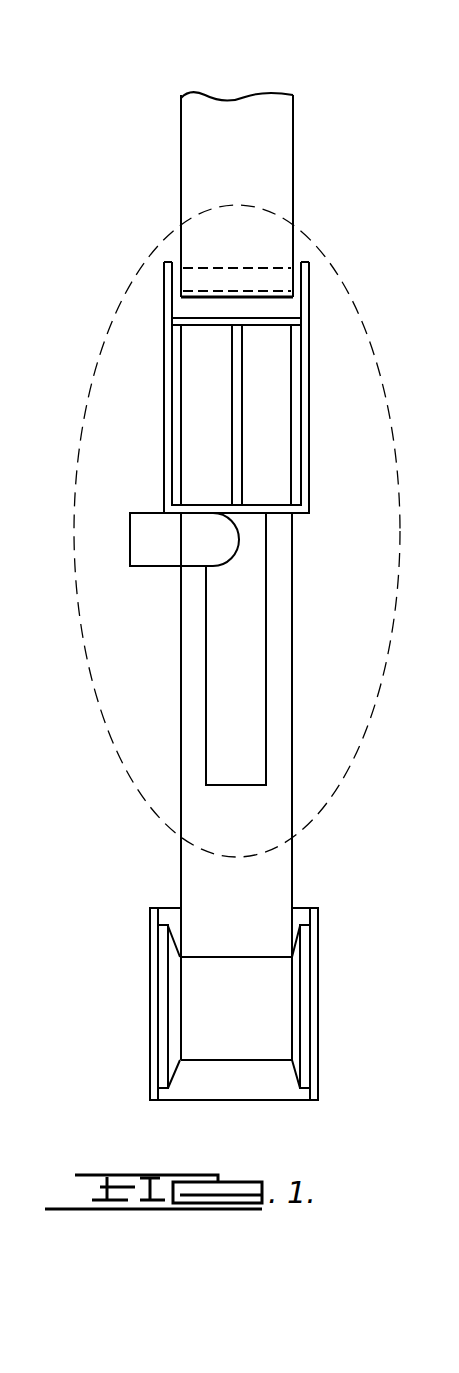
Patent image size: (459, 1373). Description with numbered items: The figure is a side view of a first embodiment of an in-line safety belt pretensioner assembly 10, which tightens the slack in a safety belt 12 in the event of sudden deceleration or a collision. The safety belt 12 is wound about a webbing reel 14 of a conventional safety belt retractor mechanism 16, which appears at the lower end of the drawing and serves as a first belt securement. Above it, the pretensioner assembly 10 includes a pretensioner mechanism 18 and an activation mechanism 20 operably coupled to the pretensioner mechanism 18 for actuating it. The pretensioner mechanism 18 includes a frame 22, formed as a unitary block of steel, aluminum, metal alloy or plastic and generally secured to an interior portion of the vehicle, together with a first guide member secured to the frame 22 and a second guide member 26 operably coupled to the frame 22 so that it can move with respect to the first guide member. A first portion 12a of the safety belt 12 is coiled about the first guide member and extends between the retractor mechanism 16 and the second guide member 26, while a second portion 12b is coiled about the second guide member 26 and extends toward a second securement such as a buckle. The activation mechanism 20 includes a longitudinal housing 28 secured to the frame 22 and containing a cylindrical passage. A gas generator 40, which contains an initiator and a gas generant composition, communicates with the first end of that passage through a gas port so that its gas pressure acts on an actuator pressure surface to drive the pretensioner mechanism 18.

The pretensioner assembly 10 is at (90, 383).
The safety belt 12 is at (200, 167).
The first portion of safety belt 12a is at (198, 887).
The second portion of safety belt 12b is at (207, 104).
The webbing reel 14 is at (293, 1062).
The safety belt retractor mechanism 16 is at (157, 1025).
The pretensioner mechanism 18 is at (321, 302).
The activation mechanism 20 is at (273, 637).
The frame 22 is at (309, 382).
The second guide member 26 is at (275, 278).
The longitudinal housing 28 is at (238, 730).
The gas generator 40 is at (160, 543).